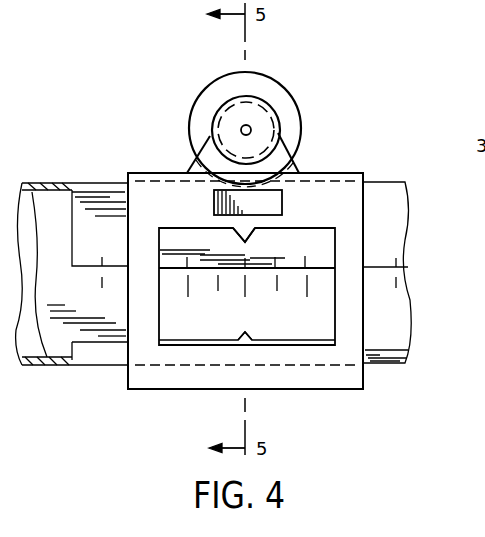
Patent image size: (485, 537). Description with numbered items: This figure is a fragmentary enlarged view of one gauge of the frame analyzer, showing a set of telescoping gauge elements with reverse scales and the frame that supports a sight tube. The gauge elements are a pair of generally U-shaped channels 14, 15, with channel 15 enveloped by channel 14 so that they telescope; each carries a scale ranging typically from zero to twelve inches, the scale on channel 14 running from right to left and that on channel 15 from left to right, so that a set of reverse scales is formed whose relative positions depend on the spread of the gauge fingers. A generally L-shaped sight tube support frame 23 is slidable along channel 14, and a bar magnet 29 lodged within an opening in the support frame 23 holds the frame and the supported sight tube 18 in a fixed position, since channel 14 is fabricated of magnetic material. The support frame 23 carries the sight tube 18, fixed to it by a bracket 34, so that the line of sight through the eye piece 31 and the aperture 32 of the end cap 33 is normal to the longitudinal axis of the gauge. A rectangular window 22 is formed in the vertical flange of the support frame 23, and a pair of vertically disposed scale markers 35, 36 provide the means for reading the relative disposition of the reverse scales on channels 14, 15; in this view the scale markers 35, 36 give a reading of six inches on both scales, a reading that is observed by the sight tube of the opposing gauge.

The channel 14 is at (88, 182).
The channel 15 is at (392, 320).
The sight tube 18 is at (212, 112).
The window 22 is at (327, 302).
The sight tube support frame 23 is at (175, 190).
The bar magnet 29 is at (272, 205).
The eye piece 31 is at (277, 83).
The aperture 32 is at (245, 125).
The end cap 33 is at (278, 108).
The bracket 34 is at (298, 145).
The scale marker 35 is at (257, 233).
The scale marker 36 is at (252, 343).